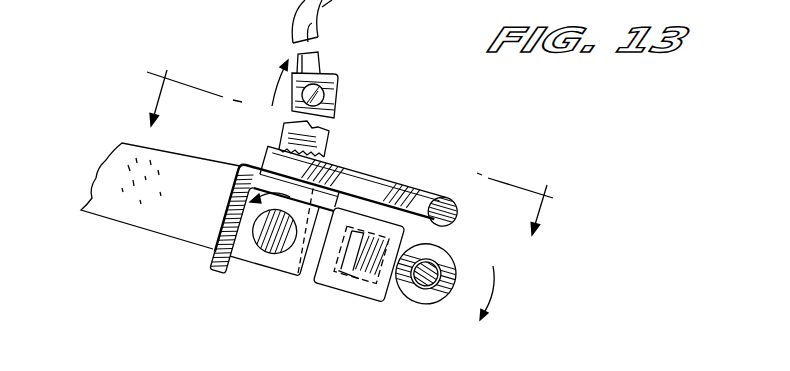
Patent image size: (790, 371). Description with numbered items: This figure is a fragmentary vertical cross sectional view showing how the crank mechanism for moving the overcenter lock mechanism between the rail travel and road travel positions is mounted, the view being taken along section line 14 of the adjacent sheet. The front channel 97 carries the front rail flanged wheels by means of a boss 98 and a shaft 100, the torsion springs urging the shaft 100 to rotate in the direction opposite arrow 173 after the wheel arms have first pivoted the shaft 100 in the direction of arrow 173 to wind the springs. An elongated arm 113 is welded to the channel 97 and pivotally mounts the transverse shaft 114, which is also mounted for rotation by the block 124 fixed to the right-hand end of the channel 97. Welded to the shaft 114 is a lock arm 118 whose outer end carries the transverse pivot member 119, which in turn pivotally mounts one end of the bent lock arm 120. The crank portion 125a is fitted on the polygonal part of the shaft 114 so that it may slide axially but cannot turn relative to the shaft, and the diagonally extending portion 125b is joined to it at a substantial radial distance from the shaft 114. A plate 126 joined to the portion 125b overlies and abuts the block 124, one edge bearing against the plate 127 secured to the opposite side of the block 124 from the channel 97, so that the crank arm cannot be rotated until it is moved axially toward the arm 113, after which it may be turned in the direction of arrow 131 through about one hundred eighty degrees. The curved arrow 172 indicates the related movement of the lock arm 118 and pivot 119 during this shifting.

The section line 14- 14 is at (367, 127).
The front channel 97 is at (356, 283).
The boss 98 is at (448, 276).
The shaft 100 is at (430, 282).
The elongated arm 113 is at (100, 225).
The transverse shaft 114 is at (277, 250).
The lock arm 118 is at (325, 140).
The transverse pivot member 119 is at (318, 92).
The bent lock arm 120 is at (319, 35).
The block 124 is at (283, 268).
The crank portion 125a is at (298, 273).
The diagonally extending portion 125b is at (388, 186).
The plate 126 is at (264, 172).
The plate 127 is at (218, 265).
The arrow 131 is at (250, 188).
The direction arrow 172 is at (271, 90).
The arrow 173 is at (495, 288).